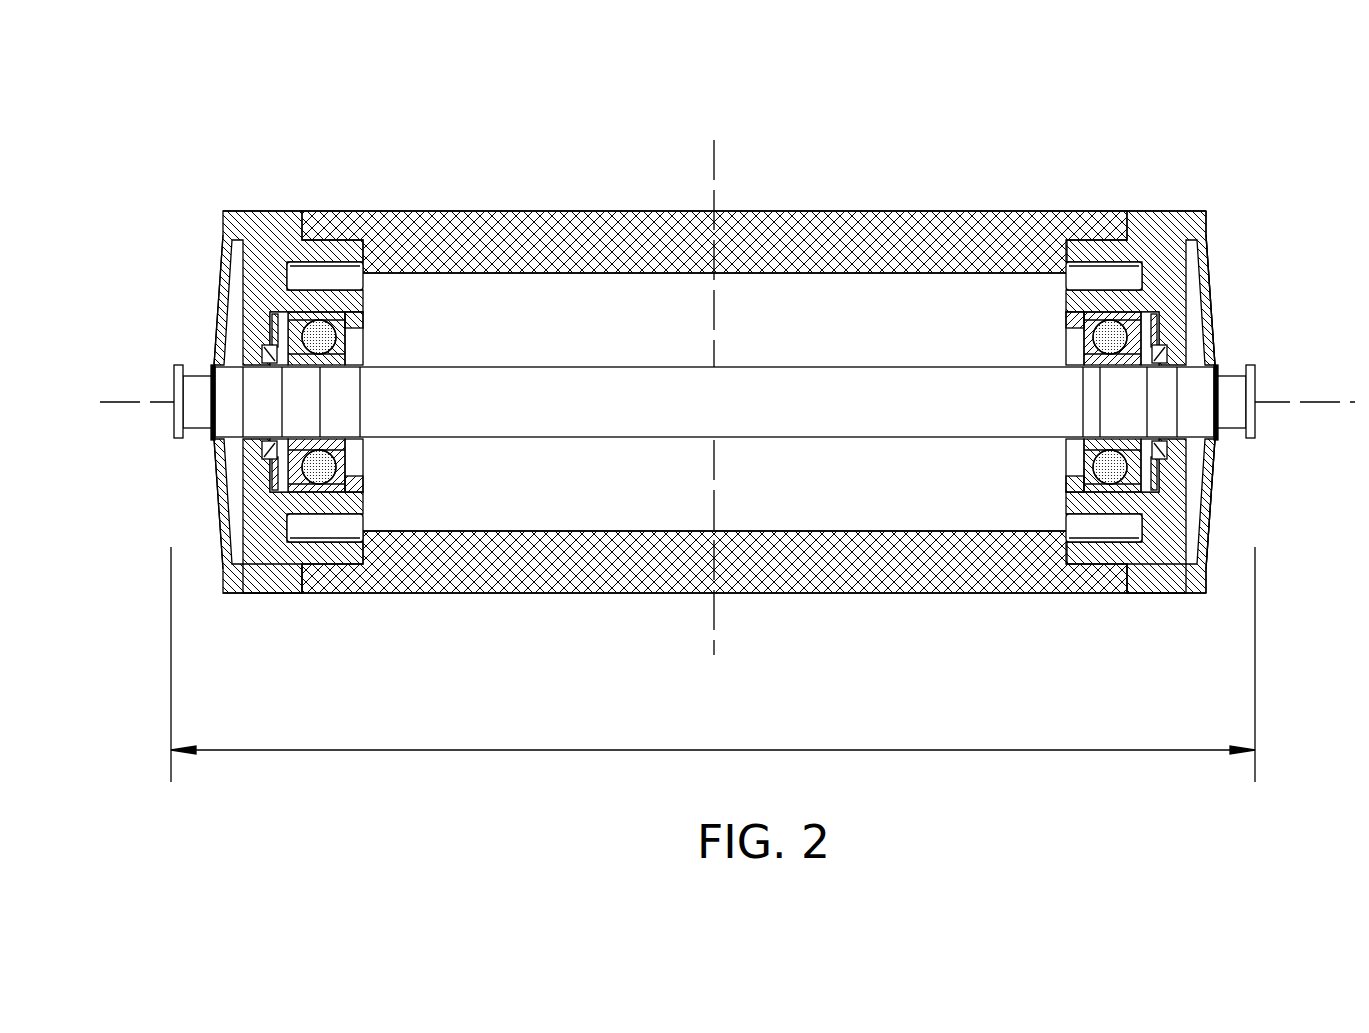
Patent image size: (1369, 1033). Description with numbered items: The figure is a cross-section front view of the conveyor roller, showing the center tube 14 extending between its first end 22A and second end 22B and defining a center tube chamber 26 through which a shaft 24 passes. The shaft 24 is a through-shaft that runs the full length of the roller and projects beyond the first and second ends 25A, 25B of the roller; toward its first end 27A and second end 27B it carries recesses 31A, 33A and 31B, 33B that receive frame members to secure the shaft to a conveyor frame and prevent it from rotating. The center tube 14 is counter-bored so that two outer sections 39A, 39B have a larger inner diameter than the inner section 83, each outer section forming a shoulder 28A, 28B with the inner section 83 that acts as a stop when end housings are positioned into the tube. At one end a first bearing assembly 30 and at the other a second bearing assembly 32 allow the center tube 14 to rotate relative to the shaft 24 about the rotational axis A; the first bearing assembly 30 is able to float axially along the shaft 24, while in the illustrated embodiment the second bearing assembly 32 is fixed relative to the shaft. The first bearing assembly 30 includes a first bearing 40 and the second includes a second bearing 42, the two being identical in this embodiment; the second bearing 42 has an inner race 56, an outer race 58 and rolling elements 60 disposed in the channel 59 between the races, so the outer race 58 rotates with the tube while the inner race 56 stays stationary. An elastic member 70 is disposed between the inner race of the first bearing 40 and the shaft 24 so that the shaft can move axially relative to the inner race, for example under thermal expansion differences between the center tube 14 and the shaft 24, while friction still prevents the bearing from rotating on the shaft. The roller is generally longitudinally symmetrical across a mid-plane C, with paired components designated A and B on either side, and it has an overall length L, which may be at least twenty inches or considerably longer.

The first bearing assembly 30 is at (203, 178).
The center tube 14 is at (878, 237).
The inner section 83 is at (548, 573).
The center tube chamber 26 is at (420, 308).
The shaft 24 is at (425, 422).
The first end of the center tube 22A is at (287, 212).
The second end of the center tube 22B is at (1187, 232).
The first outer section 39A is at (335, 575).
The second outer section 39B is at (1103, 580).
The first end of the roller 25A is at (213, 353).
The second end of the roller 25B is at (1220, 357).
The second bearing assembly 32 is at (1246, 190).
The first shoulder 28A is at (355, 265).
The second shoulder 28B is at (1083, 265).
The first bearing 40 is at (368, 300).
The second bearing 42 is at (1095, 247).
The elastic member 70 is at (300, 445).
The inner race 56 is at (1083, 443).
The outer race 58 is at (1090, 490).
The rolling elements 60 is at (1117, 467).
The channel 59 is at (1137, 483).
The recess 33A is at (200, 377).
The recess 33B is at (1232, 380).
The recess 31A is at (197, 428).
The recess 31B is at (1227, 423).
The first end of the shaft 27A is at (173, 393).
The second end of the shaft 27B is at (1258, 423).
The rotational axis A is at (113, 410).
The longitudinal mid-plane C is at (726, 373).
The length L is at (718, 750).